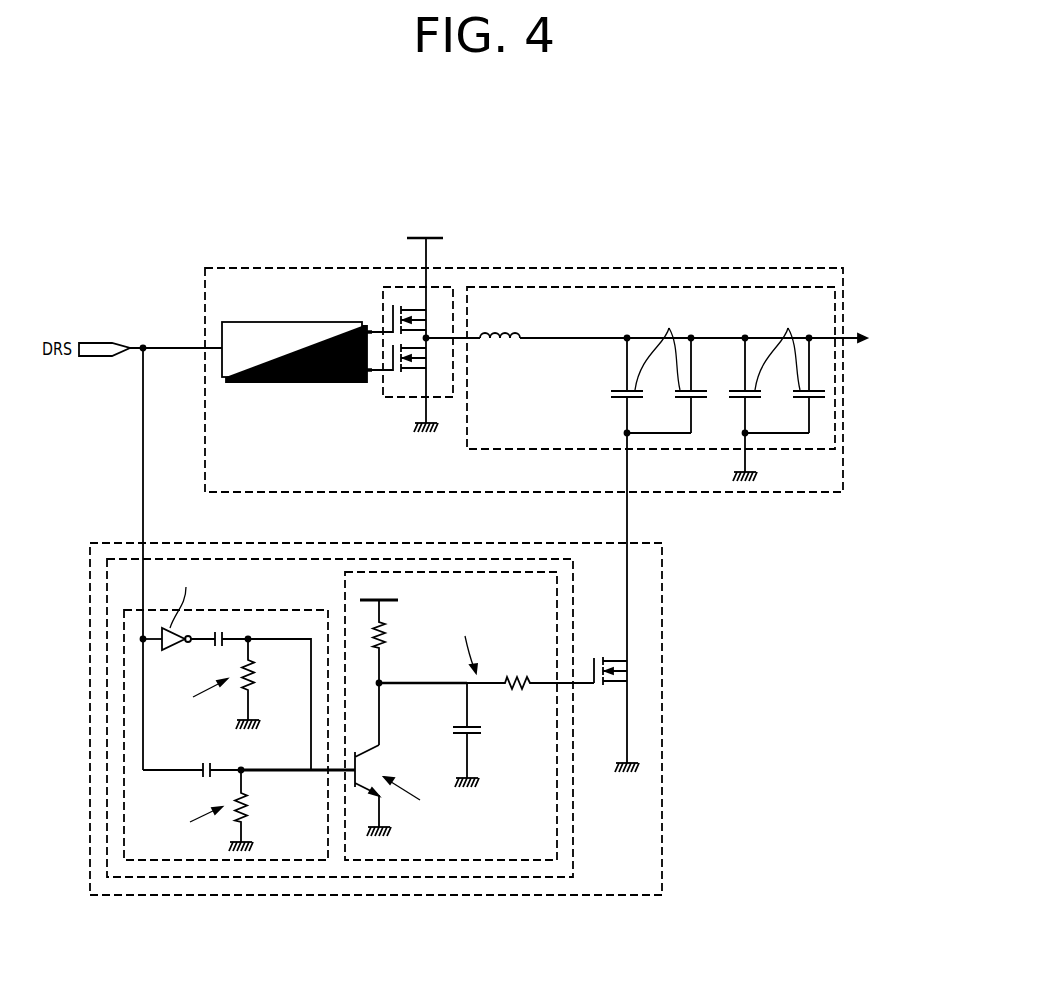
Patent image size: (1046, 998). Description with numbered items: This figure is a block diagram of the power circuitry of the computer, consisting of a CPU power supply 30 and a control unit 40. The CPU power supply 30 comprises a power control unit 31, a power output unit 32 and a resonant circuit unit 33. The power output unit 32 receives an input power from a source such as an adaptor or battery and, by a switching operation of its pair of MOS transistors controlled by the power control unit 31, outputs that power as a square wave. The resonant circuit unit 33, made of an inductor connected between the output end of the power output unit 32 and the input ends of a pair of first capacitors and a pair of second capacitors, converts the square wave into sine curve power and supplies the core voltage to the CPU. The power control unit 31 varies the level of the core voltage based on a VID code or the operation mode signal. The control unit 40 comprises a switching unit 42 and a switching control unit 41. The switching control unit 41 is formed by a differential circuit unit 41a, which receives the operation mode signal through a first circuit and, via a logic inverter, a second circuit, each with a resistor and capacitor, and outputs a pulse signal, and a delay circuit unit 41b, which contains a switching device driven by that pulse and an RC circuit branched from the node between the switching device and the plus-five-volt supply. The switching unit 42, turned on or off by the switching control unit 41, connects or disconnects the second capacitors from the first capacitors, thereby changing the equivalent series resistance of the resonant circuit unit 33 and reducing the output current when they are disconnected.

The CPU power supply 30 is at (548, 268).
The power control unit 31 is at (312, 322).
The power output unit 32 is at (437, 287).
The resonant circuit unit 33 is at (652, 287).
The control unit 40 is at (662, 730).
The switching control unit 41 is at (315, 877).
The differential circuit unit 41a is at (195, 860).
The delay circuit unit 41b is at (460, 860).
The switching unit 42 is at (637, 662).